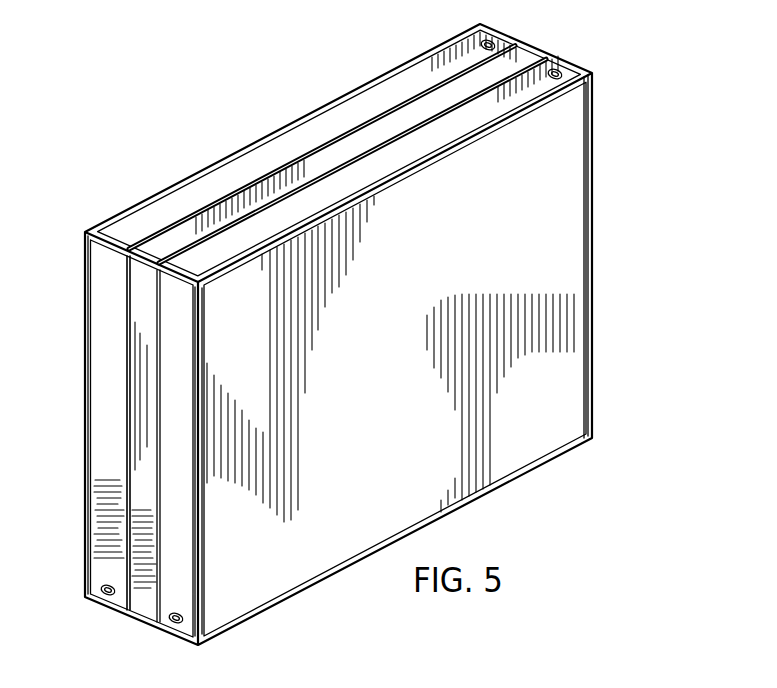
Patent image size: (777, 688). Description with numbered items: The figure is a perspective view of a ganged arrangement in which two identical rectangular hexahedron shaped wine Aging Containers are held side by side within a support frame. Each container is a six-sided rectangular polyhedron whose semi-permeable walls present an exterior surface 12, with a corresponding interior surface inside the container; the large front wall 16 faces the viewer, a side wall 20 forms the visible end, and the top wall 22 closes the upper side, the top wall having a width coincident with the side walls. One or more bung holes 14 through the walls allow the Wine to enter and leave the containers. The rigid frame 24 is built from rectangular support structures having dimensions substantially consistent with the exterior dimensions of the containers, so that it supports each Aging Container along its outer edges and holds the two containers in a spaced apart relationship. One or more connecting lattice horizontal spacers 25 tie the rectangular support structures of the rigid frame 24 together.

The exterior surface 12 is at (346, 137).
The bung hole 14 is at (557, 71).
The front wall 16 is at (572, 412).
The side wall 20 is at (170, 318).
The top wall 22 is at (437, 133).
The rigid frame 24 is at (598, 176).
The connecting lattice horizontal spacer 25 is at (150, 257).